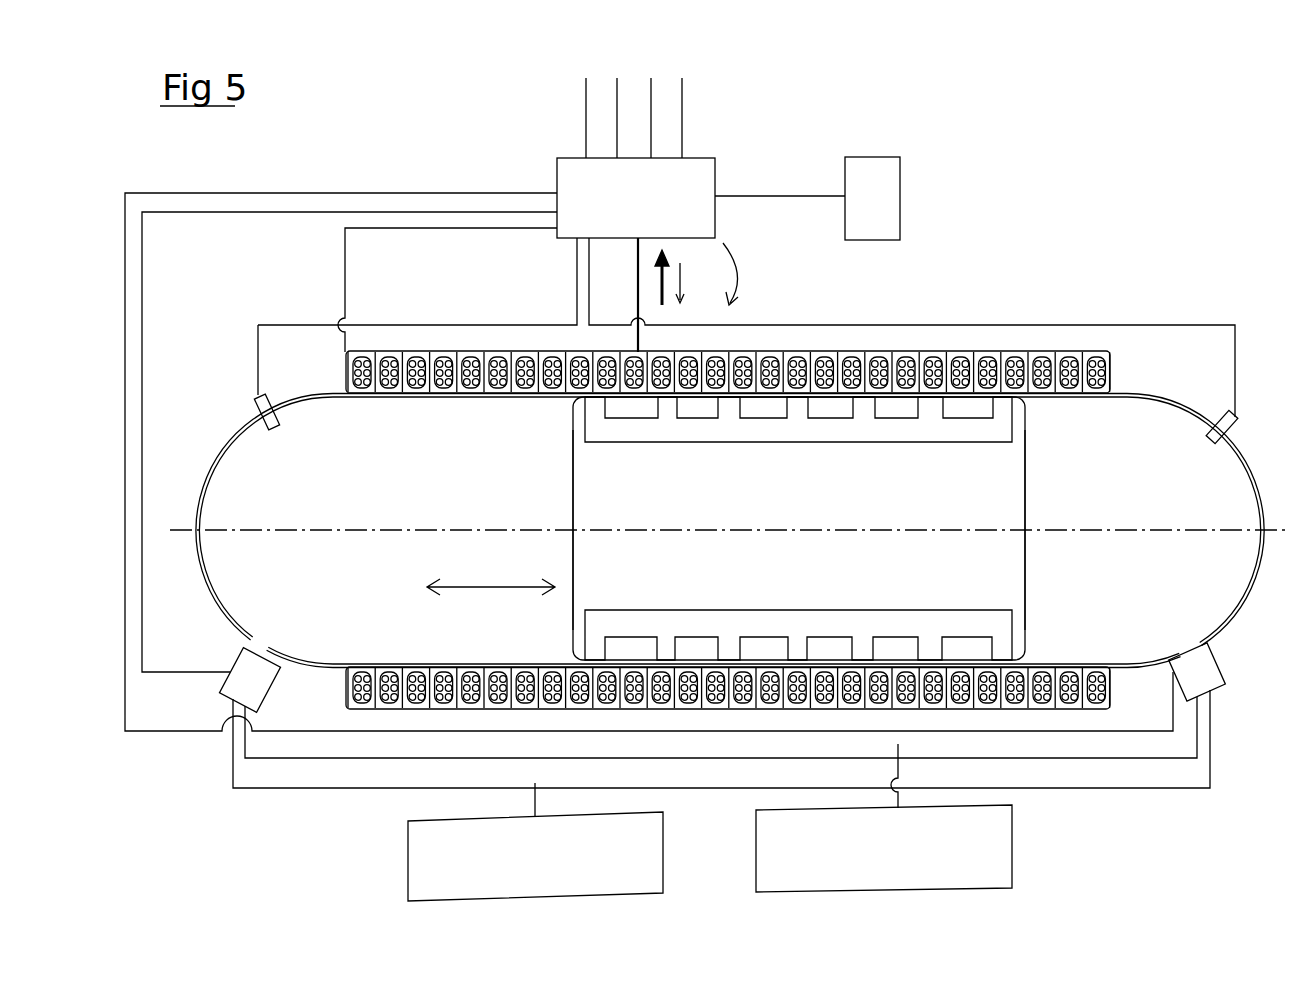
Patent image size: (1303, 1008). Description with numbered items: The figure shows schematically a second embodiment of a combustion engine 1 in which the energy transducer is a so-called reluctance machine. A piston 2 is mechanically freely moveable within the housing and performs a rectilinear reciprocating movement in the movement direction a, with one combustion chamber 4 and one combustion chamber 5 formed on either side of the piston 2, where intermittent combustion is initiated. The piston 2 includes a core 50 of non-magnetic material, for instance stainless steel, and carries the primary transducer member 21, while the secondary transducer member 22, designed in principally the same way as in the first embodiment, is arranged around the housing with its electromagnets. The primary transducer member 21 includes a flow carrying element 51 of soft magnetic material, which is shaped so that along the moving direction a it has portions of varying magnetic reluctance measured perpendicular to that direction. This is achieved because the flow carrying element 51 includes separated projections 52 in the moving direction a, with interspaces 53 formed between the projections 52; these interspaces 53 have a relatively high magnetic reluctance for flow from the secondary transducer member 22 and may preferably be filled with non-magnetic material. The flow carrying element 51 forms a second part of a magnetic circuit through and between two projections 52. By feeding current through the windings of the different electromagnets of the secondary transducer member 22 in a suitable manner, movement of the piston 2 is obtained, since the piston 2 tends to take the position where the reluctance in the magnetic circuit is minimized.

The combustion engine 1 is at (1095, 279).
The piston 2 is at (1020, 563).
The combustion chamber 4 is at (1170, 517).
The combustion chamber 5 is at (390, 517).
The primary transducer member 21 is at (607, 453).
The secondary transducer member 22 is at (917, 345).
The core 50 is at (1005, 490).
The flow carrying element 51 is at (992, 427).
The projections 52 is at (930, 408).
The interspaces 53 is at (760, 407).
The movement direction a is at (478, 586).